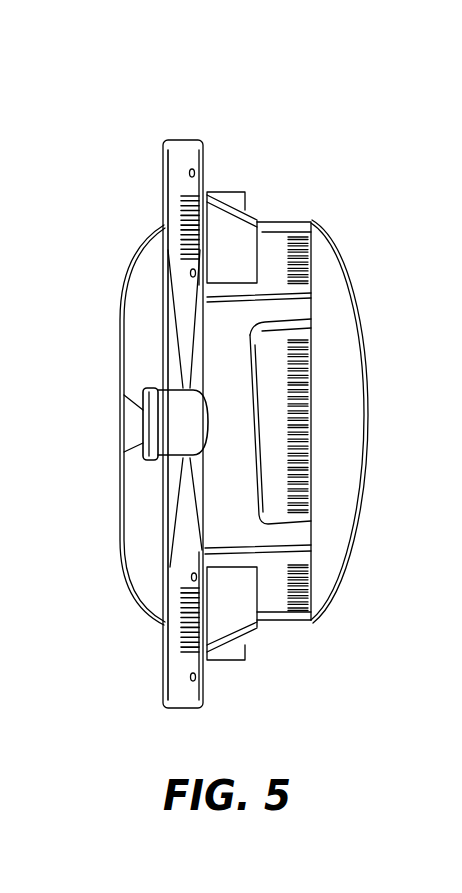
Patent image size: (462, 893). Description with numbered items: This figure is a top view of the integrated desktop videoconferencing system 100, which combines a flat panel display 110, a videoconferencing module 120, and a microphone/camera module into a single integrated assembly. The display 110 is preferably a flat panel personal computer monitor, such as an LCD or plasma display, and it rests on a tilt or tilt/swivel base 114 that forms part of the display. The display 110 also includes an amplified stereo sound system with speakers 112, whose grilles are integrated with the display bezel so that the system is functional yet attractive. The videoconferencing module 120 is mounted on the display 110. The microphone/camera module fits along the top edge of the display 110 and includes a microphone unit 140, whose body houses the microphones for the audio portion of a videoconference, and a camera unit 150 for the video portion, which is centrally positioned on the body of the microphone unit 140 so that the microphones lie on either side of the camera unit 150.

The integrated desktop videoconferencing system 100 is at (71, 131).
The display 110 is at (257, 220).
The speakers 112 is at (251, 645).
The tilt or tilt/swivel base 114 is at (337, 250).
The videoconferencing module 120 is at (317, 383).
The microphone unit 140 is at (171, 140).
The camera unit 150 is at (142, 420).